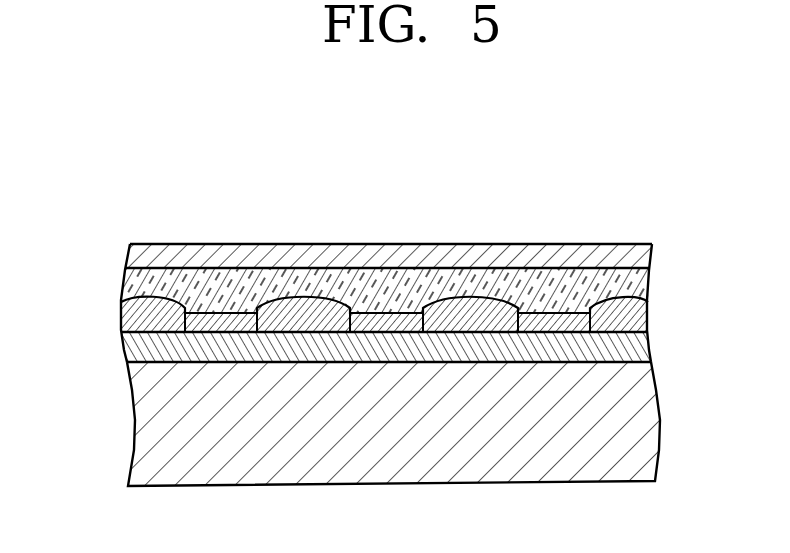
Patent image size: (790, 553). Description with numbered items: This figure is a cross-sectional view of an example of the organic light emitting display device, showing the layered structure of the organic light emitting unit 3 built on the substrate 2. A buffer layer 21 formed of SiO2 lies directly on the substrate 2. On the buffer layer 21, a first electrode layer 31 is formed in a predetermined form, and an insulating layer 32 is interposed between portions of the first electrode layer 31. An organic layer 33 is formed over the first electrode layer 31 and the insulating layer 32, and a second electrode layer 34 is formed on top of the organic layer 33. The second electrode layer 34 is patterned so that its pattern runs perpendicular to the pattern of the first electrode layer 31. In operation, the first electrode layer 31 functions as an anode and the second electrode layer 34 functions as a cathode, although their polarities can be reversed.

The substrate 2 is at (650, 420).
The buffer layer 21 is at (651, 347).
The organic light emitting unit 3 is at (107, 282).
The first electrode layer 31 is at (560, 312).
The insulating layer 32 is at (648, 316).
The organic layer 33 is at (648, 283).
The second electrode layer 34 is at (650, 256).